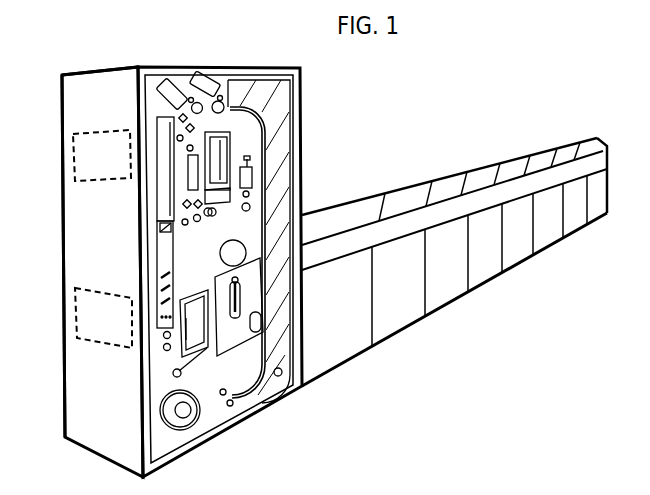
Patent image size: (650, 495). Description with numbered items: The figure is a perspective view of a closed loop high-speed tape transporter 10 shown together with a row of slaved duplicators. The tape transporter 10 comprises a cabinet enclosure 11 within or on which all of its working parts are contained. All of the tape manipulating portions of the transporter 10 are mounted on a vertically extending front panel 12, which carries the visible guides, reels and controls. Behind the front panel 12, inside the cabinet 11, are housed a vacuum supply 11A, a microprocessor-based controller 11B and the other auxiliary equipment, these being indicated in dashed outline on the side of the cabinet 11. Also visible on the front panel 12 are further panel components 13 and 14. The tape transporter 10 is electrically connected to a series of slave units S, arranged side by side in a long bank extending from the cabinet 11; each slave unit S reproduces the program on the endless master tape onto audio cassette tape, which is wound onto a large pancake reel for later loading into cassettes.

The tape transporter 10 is at (128, 56).
The cabinet enclosure 11 is at (93, 90).
The vacuum supply 11A is at (102, 155).
The microprocessor-based controller 11B is at (103, 318).
The front panel 12 is at (185, 80).
The display unit 13 is at (167, 254).
The indicator 14 is at (166, 228).
The slave units S is at (350, 210).